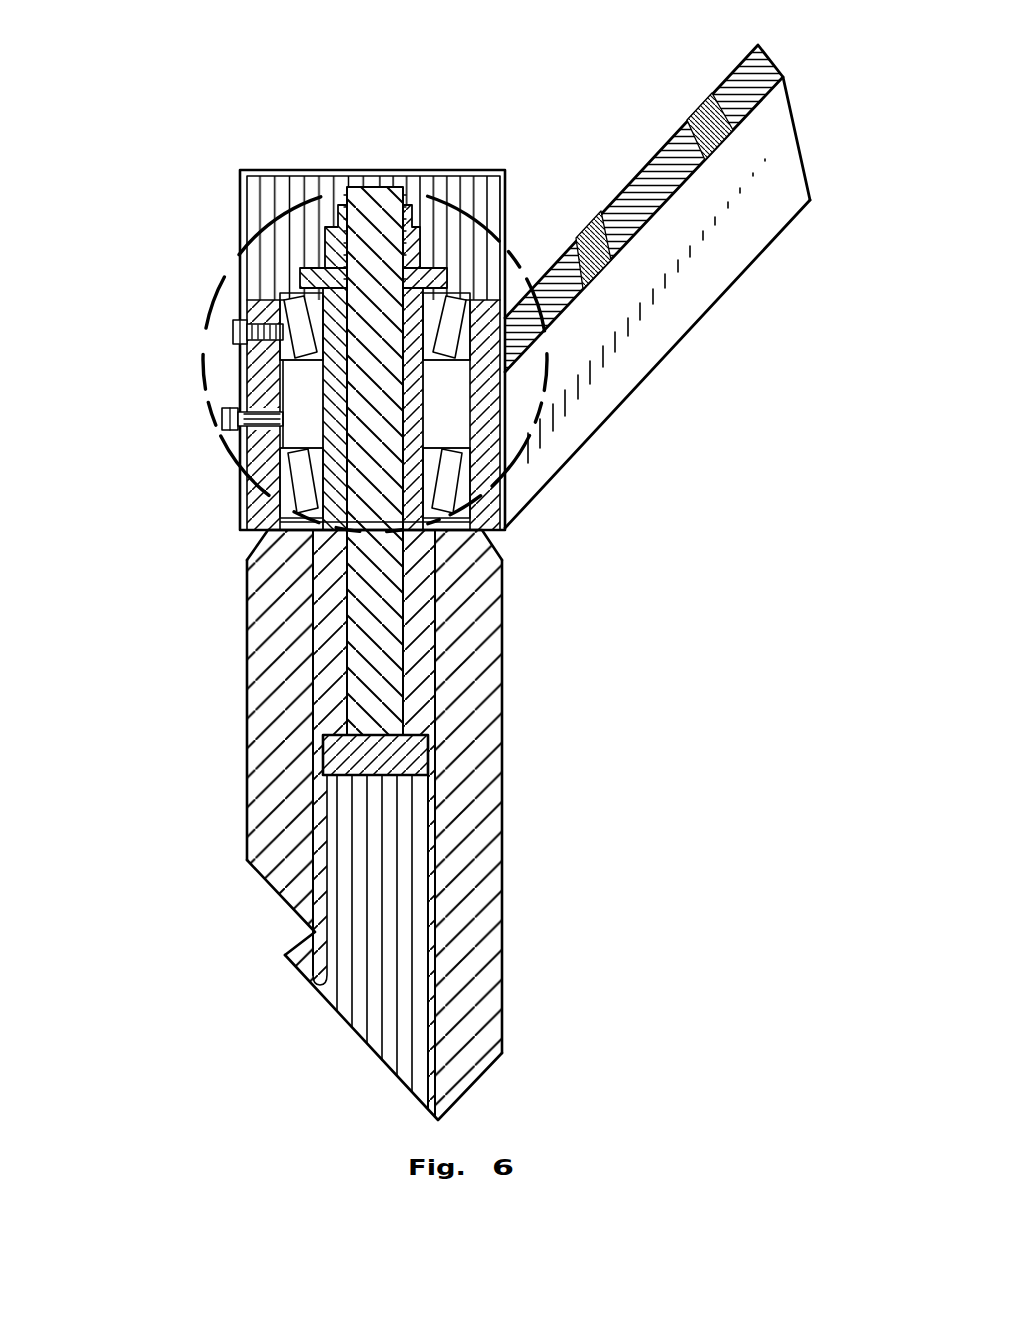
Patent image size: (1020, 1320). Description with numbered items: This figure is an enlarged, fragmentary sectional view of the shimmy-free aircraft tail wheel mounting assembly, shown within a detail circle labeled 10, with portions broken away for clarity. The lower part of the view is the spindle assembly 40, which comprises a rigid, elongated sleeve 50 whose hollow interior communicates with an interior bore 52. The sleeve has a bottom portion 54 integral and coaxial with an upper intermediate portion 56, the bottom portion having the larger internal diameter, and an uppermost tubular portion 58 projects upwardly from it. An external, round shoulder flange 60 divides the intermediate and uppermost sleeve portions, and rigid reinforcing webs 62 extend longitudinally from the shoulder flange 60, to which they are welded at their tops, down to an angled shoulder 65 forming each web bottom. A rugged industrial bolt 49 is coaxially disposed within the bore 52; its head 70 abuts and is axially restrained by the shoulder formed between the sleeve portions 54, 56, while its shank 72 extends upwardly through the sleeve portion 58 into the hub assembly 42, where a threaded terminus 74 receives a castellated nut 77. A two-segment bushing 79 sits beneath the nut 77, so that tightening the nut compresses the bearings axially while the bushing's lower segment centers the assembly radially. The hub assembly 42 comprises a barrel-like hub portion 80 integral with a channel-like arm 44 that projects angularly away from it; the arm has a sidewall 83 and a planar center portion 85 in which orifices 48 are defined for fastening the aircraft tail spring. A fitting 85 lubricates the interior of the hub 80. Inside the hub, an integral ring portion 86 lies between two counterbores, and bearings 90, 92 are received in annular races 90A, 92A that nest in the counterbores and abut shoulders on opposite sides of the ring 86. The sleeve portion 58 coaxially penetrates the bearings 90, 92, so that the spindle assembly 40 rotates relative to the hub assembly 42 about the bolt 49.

The cutting tool assembly 10 is at (203, 330).
The spindle assembly 40 is at (243, 712).
The hub assembly 42 is at (238, 267).
The channel-like arm 44 is at (805, 126).
The orifices 48 is at (722, 100).
The industrial bolt 49 is at (402, 667).
The sleeve 50 is at (420, 701).
The interior bore 52 is at (364, 1054).
The bottom sleeve portion 54 is at (403, 950).
The upper intermediate sleeve portion 56 is at (420, 570).
The uppermost tubular sleeve portion 58 is at (523, 437).
The shoulder flange 60 is at (515, 514).
The reinforcing webs 62 is at (263, 833).
The angled shoulder 65 is at (278, 902).
The bolt head 70 is at (373, 760).
The bolt shank 72 is at (363, 555).
The threaded terminus 74 is at (367, 195).
The castellated nut 77 is at (318, 248).
The two-segment bushing 79 is at (300, 268).
The hub portion 80 is at (283, 374).
The sidewall 83 is at (767, 197).
The center portion / fitting 85 is at (653, 183).
The ring portion 86 is at (305, 388).
The bearing 90 is at (298, 333).
The annular race 90A is at (275, 349).
The bearing 92 is at (300, 483).
The annular race 92A is at (277, 458).